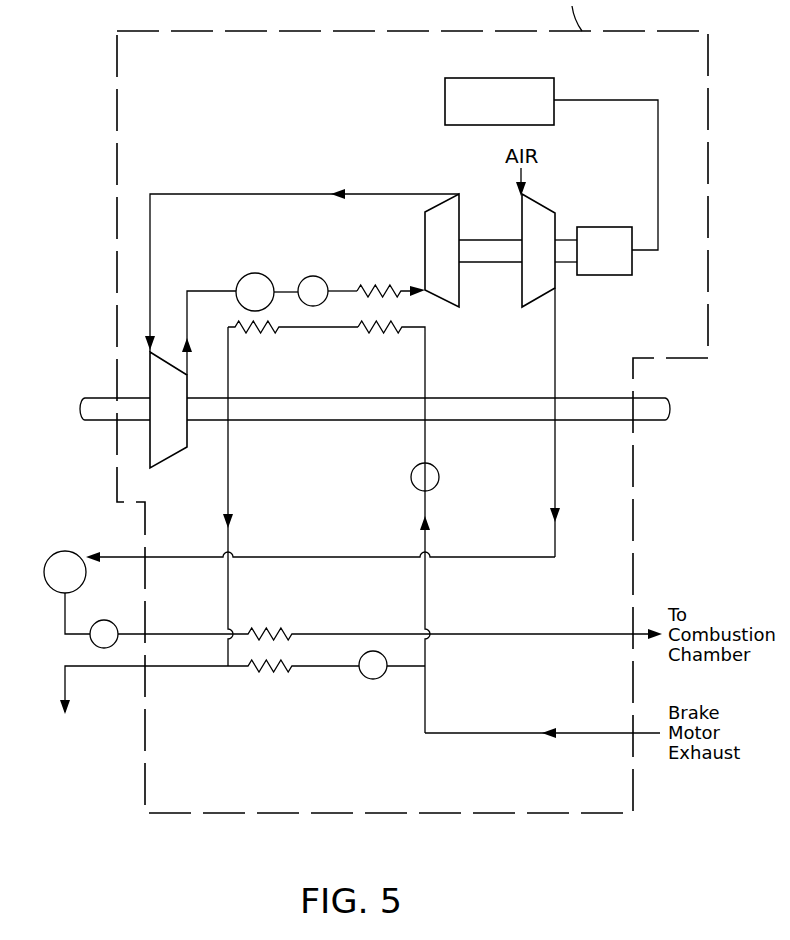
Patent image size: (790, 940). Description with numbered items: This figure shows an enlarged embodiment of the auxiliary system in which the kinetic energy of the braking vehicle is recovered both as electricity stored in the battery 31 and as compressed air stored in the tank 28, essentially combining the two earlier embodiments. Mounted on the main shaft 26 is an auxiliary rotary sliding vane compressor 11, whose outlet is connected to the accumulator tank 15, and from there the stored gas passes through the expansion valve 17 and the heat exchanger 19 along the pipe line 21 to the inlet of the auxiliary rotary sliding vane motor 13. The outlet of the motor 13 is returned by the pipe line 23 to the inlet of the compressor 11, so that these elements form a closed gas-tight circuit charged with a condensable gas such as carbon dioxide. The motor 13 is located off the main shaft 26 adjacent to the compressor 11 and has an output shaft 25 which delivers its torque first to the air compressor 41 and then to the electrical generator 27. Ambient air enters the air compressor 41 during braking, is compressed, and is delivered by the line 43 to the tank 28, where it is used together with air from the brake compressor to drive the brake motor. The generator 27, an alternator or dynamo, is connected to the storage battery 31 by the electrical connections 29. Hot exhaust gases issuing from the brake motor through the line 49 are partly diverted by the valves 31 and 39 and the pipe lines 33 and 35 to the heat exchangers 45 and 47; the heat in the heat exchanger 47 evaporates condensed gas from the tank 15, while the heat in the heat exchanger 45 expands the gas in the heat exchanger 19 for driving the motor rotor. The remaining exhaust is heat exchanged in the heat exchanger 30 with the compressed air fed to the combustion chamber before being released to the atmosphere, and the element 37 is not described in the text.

The auxiliary rotary sliding vane compressor 11 is at (168, 457).
The auxiliary rotary sliding vane motor 13 is at (446, 305).
The accumulator tank 15 is at (250, 273).
The expansion valve 17 is at (313, 276).
The heat exchanger 19 is at (377, 285).
The pipe line 21 is at (190, 290).
The pipe line 23 is at (264, 193).
The output shaft 25 is at (486, 240).
The shaft 26 is at (478, 397).
The electrical generator 27 is at (610, 275).
The surge tank 28 is at (86, 582).
The electrical connections 29 is at (658, 196).
The heat exchanger 30 is at (280, 632).
The storage battery 31 is at (445, 87).
The pipe line 33 is at (426, 448).
The pipe line 35 is at (229, 484).
The voltmeter 37 is at (440, 478).
The valve 39 is at (378, 680).
The air compressor 41 is at (522, 300).
The line 43 is at (558, 344).
The heat exchanger 45 is at (376, 333).
The heat exchanger 47 is at (260, 333).
The line 49 is at (512, 733).